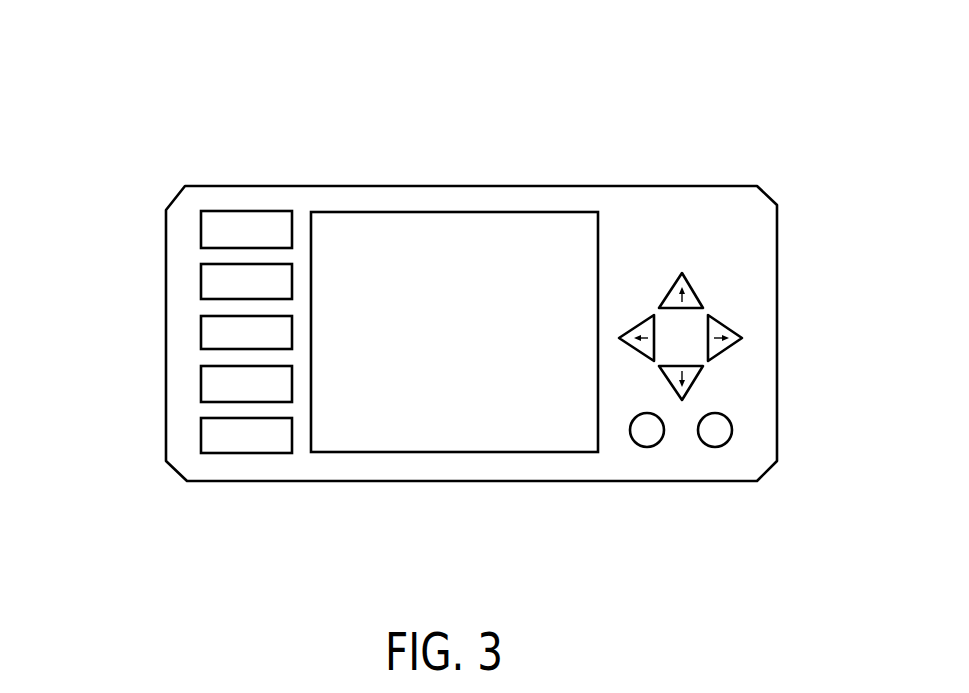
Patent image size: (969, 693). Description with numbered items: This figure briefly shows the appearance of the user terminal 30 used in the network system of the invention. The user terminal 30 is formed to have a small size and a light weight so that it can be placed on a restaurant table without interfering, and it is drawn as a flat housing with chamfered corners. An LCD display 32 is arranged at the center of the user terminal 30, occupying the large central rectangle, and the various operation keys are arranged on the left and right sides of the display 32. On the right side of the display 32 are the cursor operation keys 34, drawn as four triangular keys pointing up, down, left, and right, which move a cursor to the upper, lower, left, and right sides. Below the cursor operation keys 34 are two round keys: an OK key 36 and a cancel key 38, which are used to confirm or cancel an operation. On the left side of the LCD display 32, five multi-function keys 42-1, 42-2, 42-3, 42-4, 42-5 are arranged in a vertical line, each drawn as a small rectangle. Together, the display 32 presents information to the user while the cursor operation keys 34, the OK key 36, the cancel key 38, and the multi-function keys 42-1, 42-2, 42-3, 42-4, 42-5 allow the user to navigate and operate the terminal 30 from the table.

The user terminal 30 is at (723, 103).
The LCD display 32 is at (365, 437).
The cursor operation keys 34 is at (746, 311).
The OK key 36 is at (647, 440).
The cancel key 38 is at (712, 440).
The multi-function key 42-1 is at (208, 230).
The multi-function key 42-2 is at (216, 279).
The multi-function key 42-3 is at (213, 332).
The multi-function key 42-4 is at (212, 386).
The multi-function key 42-5 is at (213, 443).